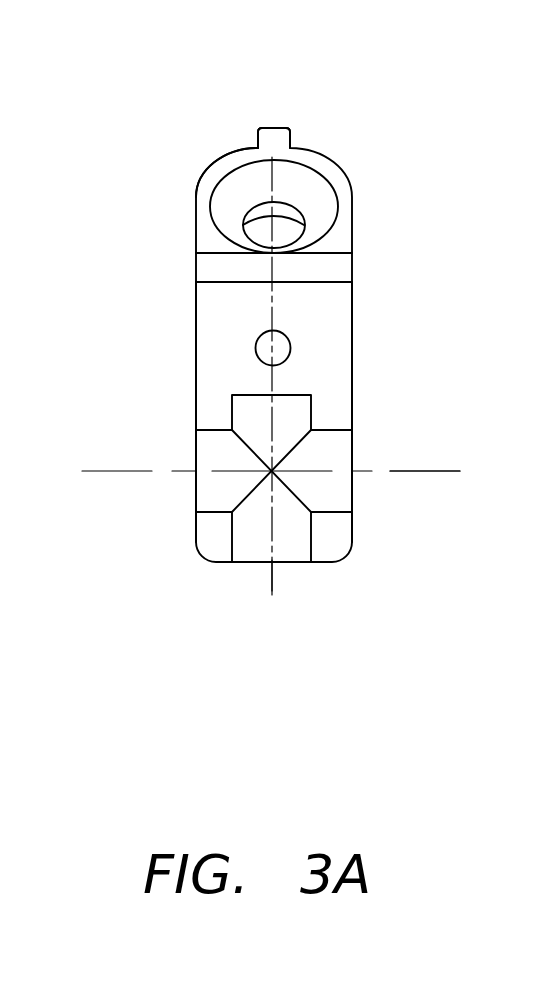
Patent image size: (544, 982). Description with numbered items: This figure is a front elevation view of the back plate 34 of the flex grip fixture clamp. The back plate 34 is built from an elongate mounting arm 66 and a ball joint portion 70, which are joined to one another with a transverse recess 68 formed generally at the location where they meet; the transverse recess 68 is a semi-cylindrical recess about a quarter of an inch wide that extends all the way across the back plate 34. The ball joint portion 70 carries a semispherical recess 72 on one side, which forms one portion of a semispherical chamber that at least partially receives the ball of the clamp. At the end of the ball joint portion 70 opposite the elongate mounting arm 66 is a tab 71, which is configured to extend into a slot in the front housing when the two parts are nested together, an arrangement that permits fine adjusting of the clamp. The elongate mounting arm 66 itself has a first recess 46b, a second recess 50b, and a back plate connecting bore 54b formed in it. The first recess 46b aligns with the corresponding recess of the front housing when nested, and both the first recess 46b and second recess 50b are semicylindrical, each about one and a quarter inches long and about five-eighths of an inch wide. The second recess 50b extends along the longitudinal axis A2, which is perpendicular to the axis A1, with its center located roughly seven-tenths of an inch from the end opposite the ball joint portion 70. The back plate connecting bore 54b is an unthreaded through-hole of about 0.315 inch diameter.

The back plate 34 is at (343, 552).
The ball joint portion 70 is at (200, 187).
The tab 71 is at (278, 132).
The semispherical recess 72 is at (317, 195).
The transverse recess 68 is at (205, 262).
The elongate mounting arm 66 is at (193, 380).
The back plate connecting bore 54b is at (277, 350).
The second recess 50b is at (337, 453).
The first recess 46b is at (255, 543).
The axis A1 is at (270, 582).
The longitudinal axis A2 is at (413, 473).